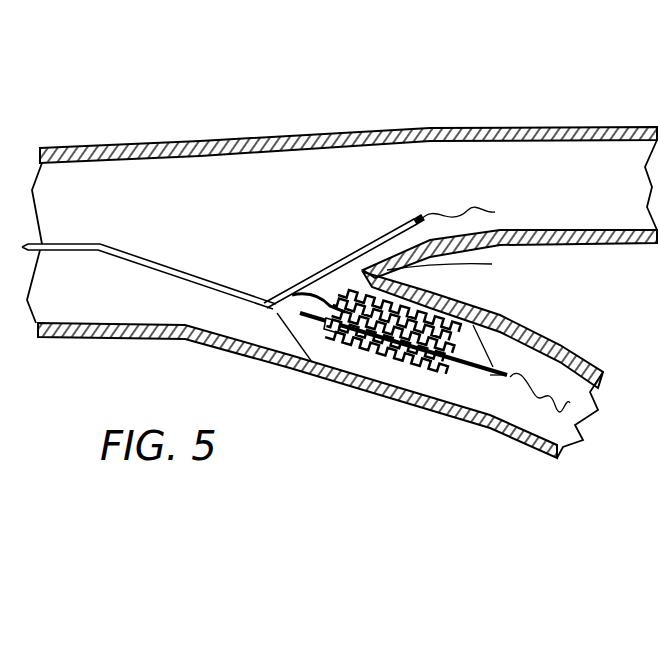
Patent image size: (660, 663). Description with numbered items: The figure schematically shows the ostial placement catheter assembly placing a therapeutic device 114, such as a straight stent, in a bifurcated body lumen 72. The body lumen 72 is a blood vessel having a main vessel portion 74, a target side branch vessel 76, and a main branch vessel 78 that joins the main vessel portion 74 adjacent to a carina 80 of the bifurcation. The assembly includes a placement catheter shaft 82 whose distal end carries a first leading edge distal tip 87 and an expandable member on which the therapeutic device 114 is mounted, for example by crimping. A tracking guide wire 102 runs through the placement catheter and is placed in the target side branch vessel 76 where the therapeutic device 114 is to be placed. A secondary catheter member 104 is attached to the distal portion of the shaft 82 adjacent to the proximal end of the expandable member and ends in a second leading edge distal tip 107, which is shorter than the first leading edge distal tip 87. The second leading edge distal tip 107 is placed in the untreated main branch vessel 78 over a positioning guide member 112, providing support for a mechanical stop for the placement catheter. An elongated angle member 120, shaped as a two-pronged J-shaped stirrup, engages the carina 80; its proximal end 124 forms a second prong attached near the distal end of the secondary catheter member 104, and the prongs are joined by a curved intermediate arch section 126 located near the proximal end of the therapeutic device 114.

The bifurcated body lumen 72 is at (326, 124).
The main vessel portion 74 is at (100, 338).
The target side branch vessel 76 is at (582, 348).
The main branch vessel 78 is at (582, 126).
The carina 80 is at (455, 269).
The placement catheter shaft 82 is at (165, 265).
The first leading edge distal tip 87 is at (490, 375).
The tracking guide wire 102 is at (527, 417).
The secondary catheter member 104 is at (340, 262).
The second leading edge distal tip 107 is at (410, 218).
The over-the-wire positioning guide member 112 is at (468, 208).
The therapeutic device 114 is at (365, 390).
The elongated angle member 120 is at (268, 302).
The proximal end of the elongated angle member 124 is at (497, 362).
The curved intermediate arch section 126 is at (270, 307).